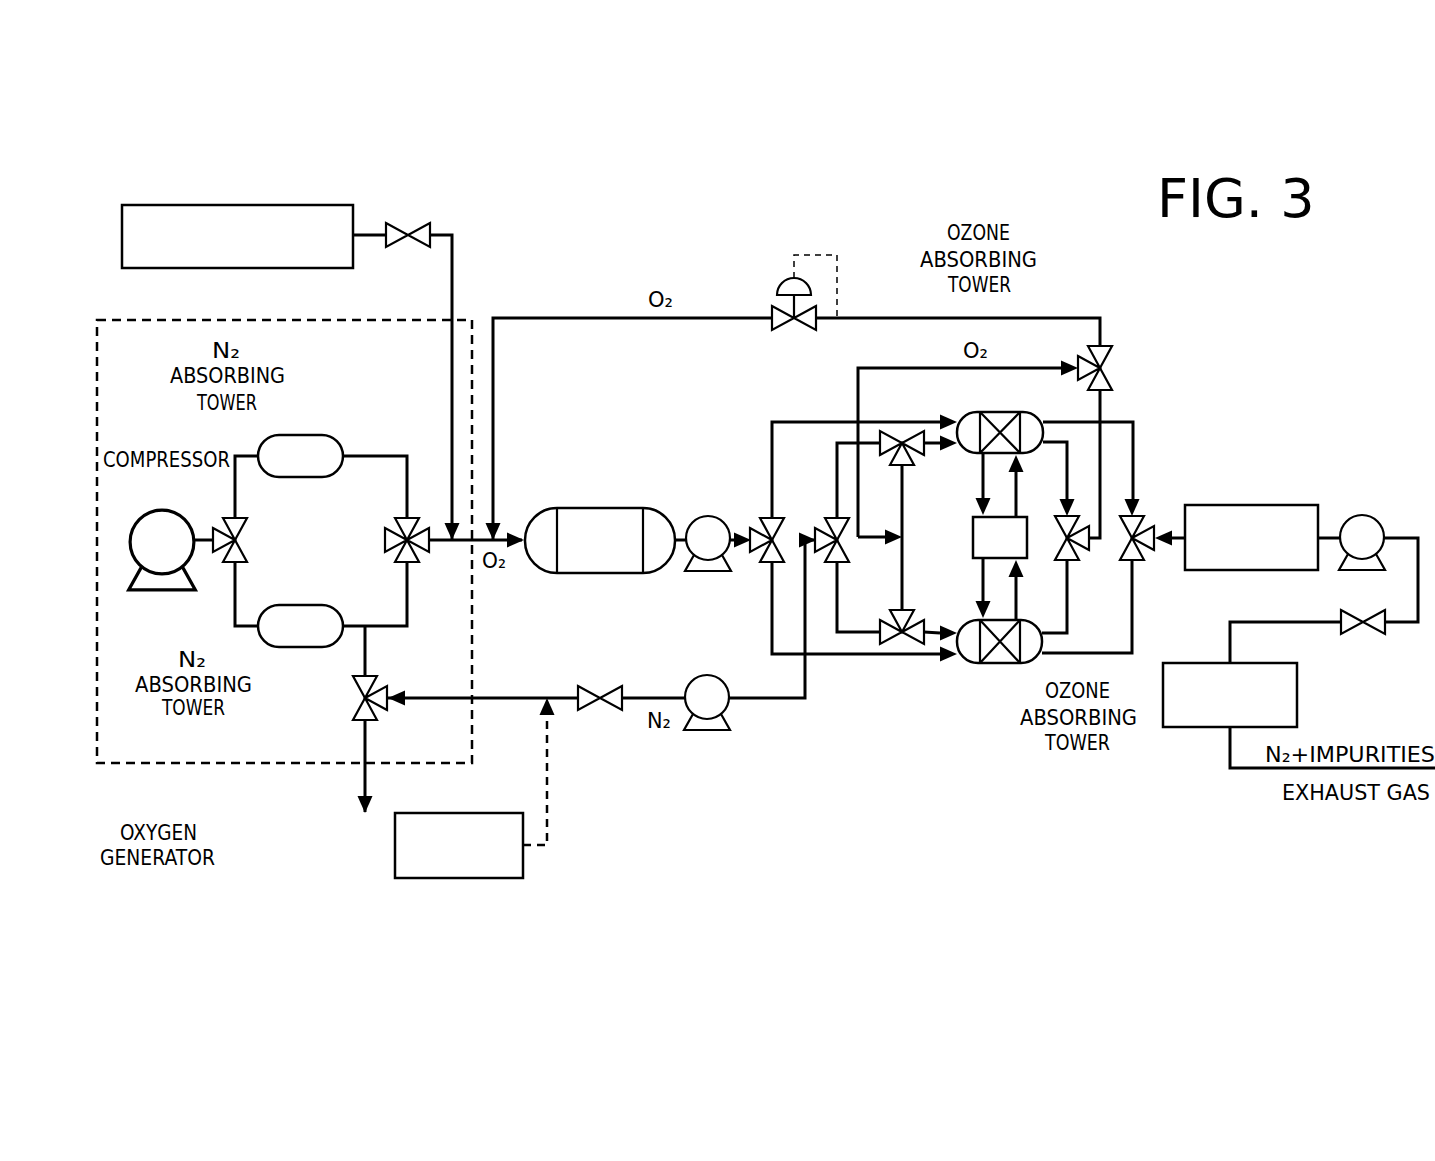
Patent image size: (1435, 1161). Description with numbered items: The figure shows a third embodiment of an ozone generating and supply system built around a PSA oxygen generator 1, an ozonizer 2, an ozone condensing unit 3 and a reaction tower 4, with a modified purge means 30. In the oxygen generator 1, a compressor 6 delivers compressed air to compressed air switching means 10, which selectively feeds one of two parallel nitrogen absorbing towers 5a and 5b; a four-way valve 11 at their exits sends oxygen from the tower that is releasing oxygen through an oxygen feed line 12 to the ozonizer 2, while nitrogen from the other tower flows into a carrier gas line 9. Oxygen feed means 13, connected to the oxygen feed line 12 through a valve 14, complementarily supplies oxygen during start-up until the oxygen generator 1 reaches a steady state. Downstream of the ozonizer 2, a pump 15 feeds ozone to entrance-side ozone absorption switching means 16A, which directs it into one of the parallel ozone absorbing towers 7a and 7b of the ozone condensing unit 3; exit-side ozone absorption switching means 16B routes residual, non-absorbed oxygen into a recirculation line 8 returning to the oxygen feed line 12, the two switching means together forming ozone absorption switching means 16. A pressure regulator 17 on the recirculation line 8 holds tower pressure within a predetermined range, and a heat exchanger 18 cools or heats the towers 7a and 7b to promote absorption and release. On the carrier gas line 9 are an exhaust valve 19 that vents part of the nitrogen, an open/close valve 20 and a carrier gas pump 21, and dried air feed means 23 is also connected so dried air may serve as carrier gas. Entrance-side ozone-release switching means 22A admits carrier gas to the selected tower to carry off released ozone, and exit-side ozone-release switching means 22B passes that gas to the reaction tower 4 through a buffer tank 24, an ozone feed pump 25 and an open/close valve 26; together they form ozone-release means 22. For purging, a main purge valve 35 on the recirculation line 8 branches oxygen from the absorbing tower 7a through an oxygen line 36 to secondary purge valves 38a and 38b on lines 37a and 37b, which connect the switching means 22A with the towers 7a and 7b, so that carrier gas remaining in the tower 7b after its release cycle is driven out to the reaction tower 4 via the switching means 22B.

The PSA oxygen generator 1 is at (163, 763).
The ozonizer 2 is at (603, 508).
The ozone condensing unit 3 is at (946, 690).
The reaction tower 4 is at (1297, 705).
The nitrogen absorbing tower 5a is at (303, 435).
The nitrogen absorbing tower 5b is at (283, 648).
The compressor 6 is at (170, 511).
The ozone absorbing tower 7a is at (1016, 412).
The ozone absorbing tower 7b is at (995, 665).
The recirculation line 8 is at (585, 318).
The carrier gas line 9 is at (790, 701).
The compressed air switching means 10 is at (247, 550).
The four-way valve 11 is at (396, 529).
The oxygen feed line 12 is at (467, 547).
The oxygen feed means 13 is at (337, 205).
The valve 14 is at (402, 223).
The pump 15 is at (718, 517).
The ozone absorption switching means 16 is at (827, 515).
The entrance-side ozone absorption switching means 16A is at (770, 518).
The exit-side ozone absorption switching means 16B is at (1085, 548).
The pressure regulator 17 is at (775, 307).
The heat exchanger 18 is at (973, 548).
The exhaust valve 19 is at (355, 710).
The open/close valve 20 is at (590, 689).
The carrier gas pump 21 is at (712, 675).
The ozone-release means 22 is at (982, 491).
The entrance-side ozone-release switching means 22A is at (830, 518).
The exit-side ozone-release switching means 22B is at (1150, 550).
The dried air feed means 23 is at (481, 813).
The buffer tank 24 is at (1300, 505).
The ozone feed pump 25 is at (1377, 485).
The open/close valve 26 is at (1341, 614).
The purge means 30 is at (880, 575).
The main purge valve 35 is at (1112, 380).
The oxygen line 36 is at (935, 370).
The line 37a is at (848, 440).
The line 37b is at (848, 636).
The secondary purge valve 38a is at (913, 456).
The secondary purge valve 38b is at (913, 620).